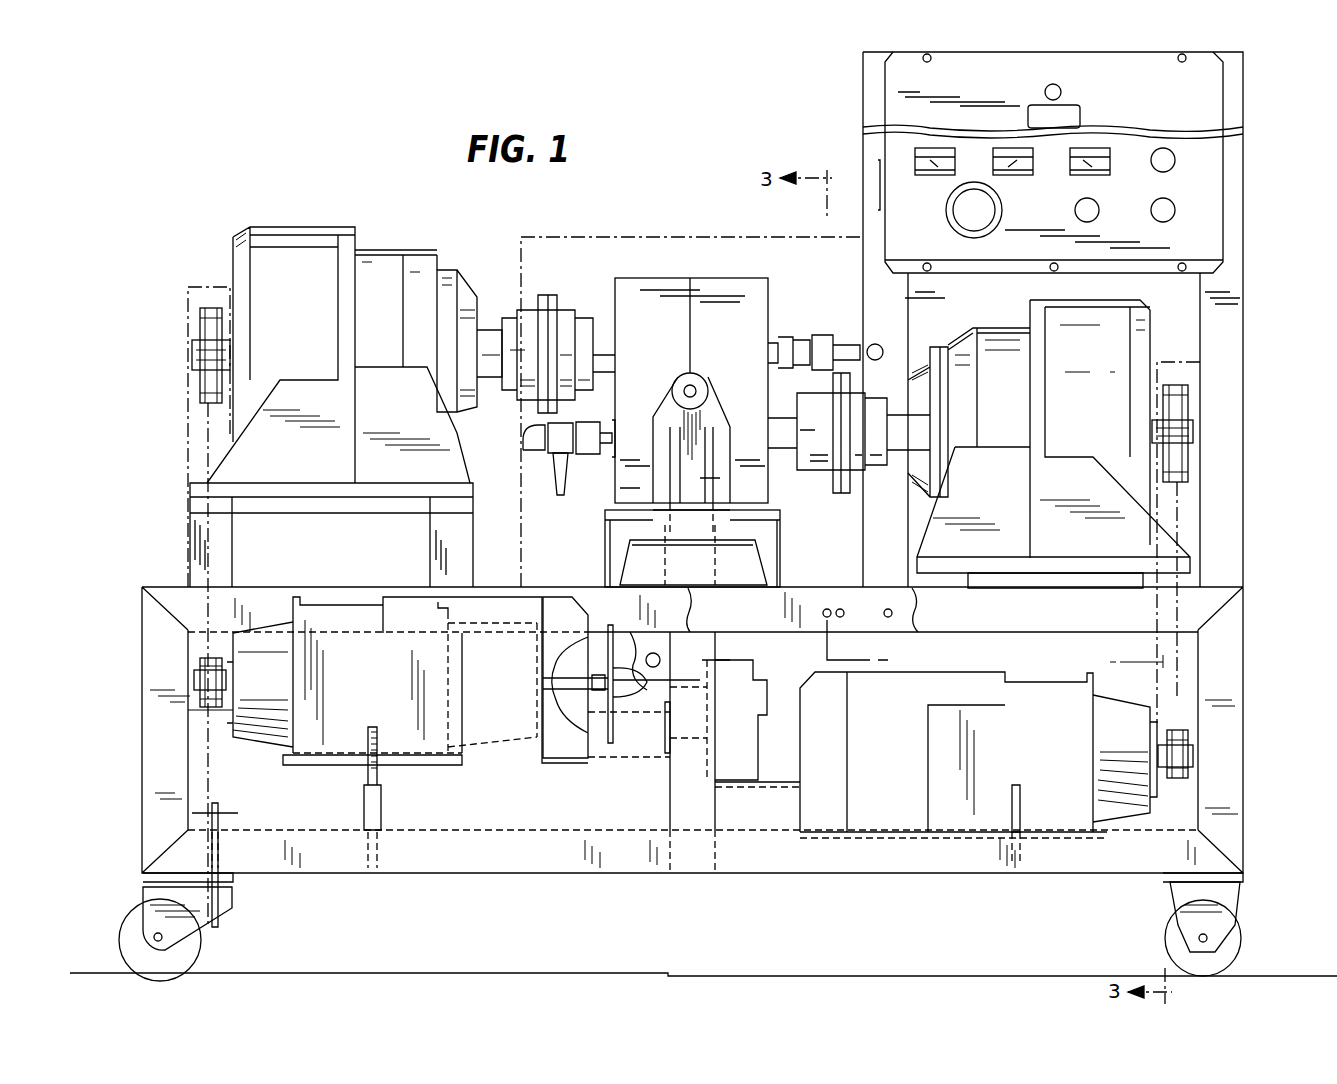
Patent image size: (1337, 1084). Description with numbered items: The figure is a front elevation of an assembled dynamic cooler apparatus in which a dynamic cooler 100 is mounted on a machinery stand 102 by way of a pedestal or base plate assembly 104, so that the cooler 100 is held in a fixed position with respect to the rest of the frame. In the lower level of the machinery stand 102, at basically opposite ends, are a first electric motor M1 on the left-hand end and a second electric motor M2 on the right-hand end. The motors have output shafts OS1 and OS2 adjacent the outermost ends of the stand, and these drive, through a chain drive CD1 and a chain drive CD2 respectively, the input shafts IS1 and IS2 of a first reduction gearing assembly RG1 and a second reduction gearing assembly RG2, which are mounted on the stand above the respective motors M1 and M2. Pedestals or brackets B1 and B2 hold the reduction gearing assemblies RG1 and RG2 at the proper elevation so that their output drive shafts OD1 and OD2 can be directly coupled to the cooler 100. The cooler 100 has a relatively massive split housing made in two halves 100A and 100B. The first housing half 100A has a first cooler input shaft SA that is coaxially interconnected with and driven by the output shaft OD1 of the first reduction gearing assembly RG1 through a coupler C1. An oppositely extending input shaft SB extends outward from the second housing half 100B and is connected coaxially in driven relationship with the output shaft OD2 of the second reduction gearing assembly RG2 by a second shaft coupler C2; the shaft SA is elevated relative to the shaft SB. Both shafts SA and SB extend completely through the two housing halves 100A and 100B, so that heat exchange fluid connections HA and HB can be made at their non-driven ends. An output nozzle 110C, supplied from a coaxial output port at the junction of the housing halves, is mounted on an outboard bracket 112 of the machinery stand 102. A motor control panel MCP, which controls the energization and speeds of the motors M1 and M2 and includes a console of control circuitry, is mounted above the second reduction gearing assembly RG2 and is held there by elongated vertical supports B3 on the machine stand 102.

The machinery stand 102 is at (1150, 612).
The elongated vertical supports B3 is at (1240, 200).
The motor control panel MCP is at (1160, 108).
The first reduction gearing assembly RG1 is at (310, 319).
The pedestal or bracket B1 is at (222, 538).
The input shaft IS1 is at (192, 352).
The chain drive CD1 is at (208, 446).
The output drive shaft OD1 is at (487, 337).
The coupler C1 is at (558, 305).
The first cooler input shaft SA is at (597, 350).
The dynamic cooler 100 is at (708, 272).
The first housing half 100A is at (675, 327).
The second housing half 100B is at (751, 327).
The output nozzle 110C is at (700, 383).
The heat exchange fluid connection HA is at (795, 338).
The heat exchange fluid connection HB is at (590, 456).
The pedestal or base plate assembly 104 is at (602, 525).
The outboard bracket 112 is at (745, 515).
The input shaft SB is at (775, 448).
The second shaft coupler C2 is at (836, 492).
The output drive shaft OD2 is at (905, 418).
The second reduction gearing assembly RG2 is at (1110, 418).
The pedestal or bracket B2 is at (1037, 577).
The input shaft IS2 is at (1196, 430).
The chain drive CD2 is at (1178, 510).
The first electric motor M1 is at (376, 693).
The output shaft OS1 is at (197, 678).
The second electric motor M2 is at (1040, 750).
The output shaft OS2 is at (1195, 757).